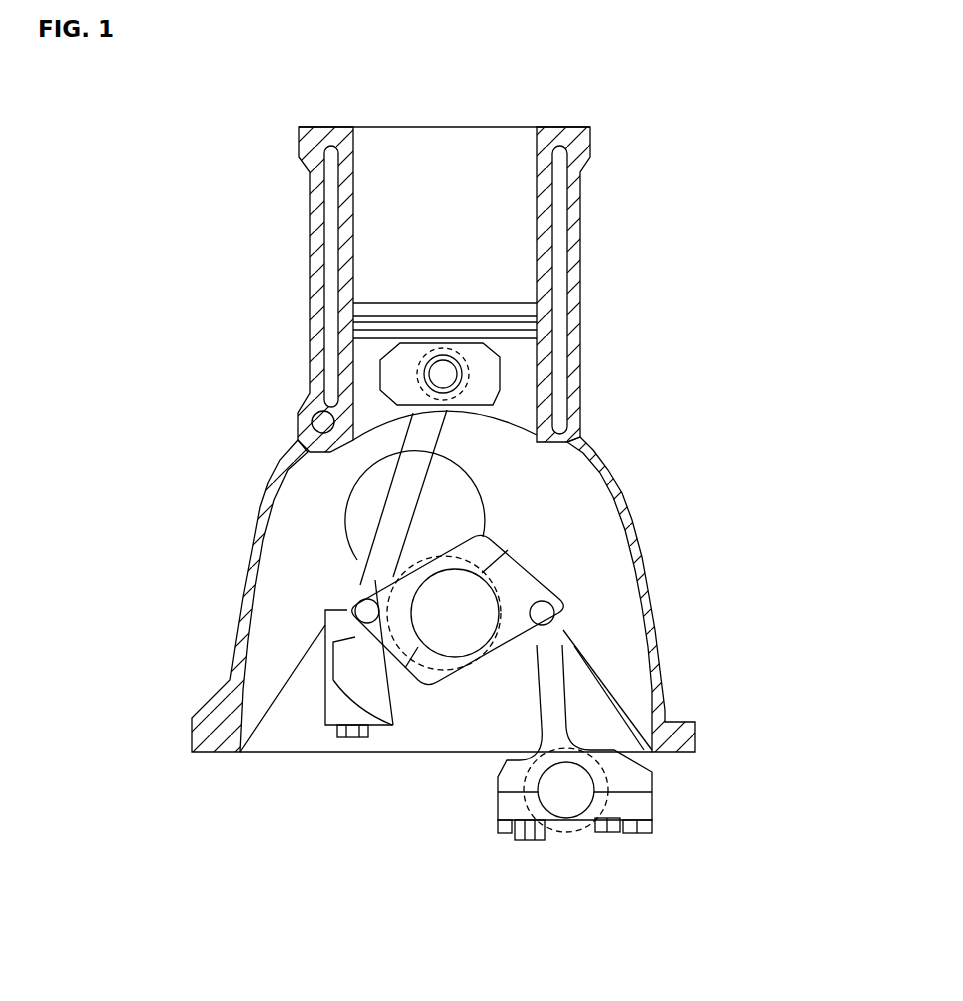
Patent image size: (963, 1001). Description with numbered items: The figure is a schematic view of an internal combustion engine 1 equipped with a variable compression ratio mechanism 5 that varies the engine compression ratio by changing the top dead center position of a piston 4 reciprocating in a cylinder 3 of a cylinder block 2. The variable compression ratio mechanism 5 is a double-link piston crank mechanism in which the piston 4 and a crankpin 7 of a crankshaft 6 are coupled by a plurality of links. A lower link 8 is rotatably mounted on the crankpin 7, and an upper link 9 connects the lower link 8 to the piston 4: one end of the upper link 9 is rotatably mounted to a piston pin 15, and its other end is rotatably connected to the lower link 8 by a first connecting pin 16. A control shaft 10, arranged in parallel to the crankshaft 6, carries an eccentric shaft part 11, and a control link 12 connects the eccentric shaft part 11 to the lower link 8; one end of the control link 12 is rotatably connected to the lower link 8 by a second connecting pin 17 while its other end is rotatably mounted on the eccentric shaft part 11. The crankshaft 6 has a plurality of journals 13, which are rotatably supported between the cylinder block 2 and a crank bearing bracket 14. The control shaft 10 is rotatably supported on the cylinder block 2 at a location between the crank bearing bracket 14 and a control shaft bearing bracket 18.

The internal combustion engine 1 is at (600, 383).
The cylinder block 2 is at (580, 246).
The cylinder 3 is at (535, 220).
The piston 4 is at (523, 360).
The variable compression ratio mechanism 5 is at (548, 550).
The crankshaft 6 is at (348, 857).
The crankpin 7 is at (454, 618).
The lower link 8 is at (537, 587).
The upper link 9 is at (410, 477).
The control shaft 10 is at (527, 840).
The eccentric shaft part 11 is at (565, 790).
The control link 12 is at (552, 682).
The journal 13 is at (393, 750).
The crank bearing bracket 14 is at (340, 712).
The piston pin 15 is at (440, 373).
The first connecting pin 16 is at (365, 605).
The second connecting pin 17 is at (542, 615).
The control shaft bearing bracket 18 is at (637, 805).